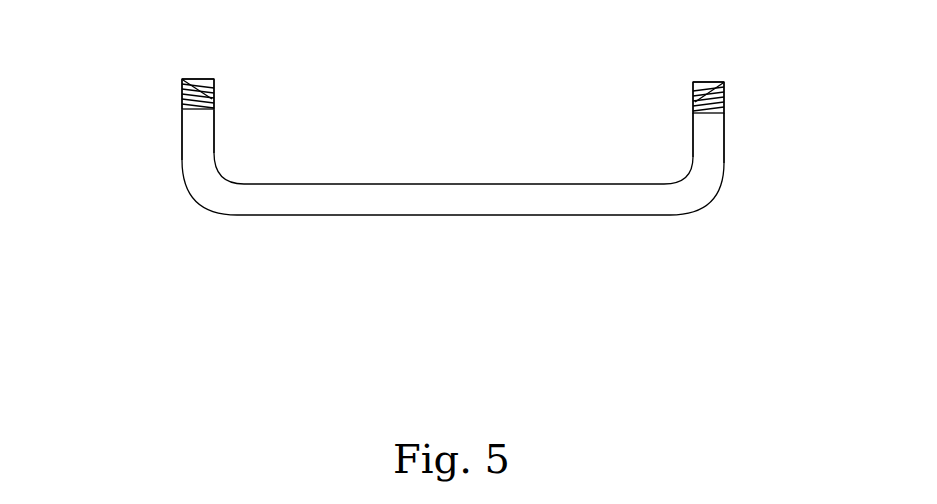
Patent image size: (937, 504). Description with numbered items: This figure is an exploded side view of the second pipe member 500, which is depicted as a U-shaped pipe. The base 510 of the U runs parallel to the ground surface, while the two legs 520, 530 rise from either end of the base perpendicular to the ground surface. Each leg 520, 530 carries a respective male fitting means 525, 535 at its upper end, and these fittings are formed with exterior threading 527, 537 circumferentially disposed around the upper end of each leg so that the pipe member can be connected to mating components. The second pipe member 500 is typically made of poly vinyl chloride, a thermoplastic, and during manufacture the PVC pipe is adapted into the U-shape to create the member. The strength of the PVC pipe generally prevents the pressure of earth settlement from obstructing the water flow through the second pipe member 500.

The second pipe member 500 is at (461, 207).
The base 510 is at (555, 197).
The leg 520 is at (182, 152).
The male fitting means 525 is at (182, 100).
The exterior threading 527 is at (182, 79).
The leg 530 is at (724, 153).
The male fitting means 535 is at (724, 102).
The exterior threading 537 is at (724, 81).